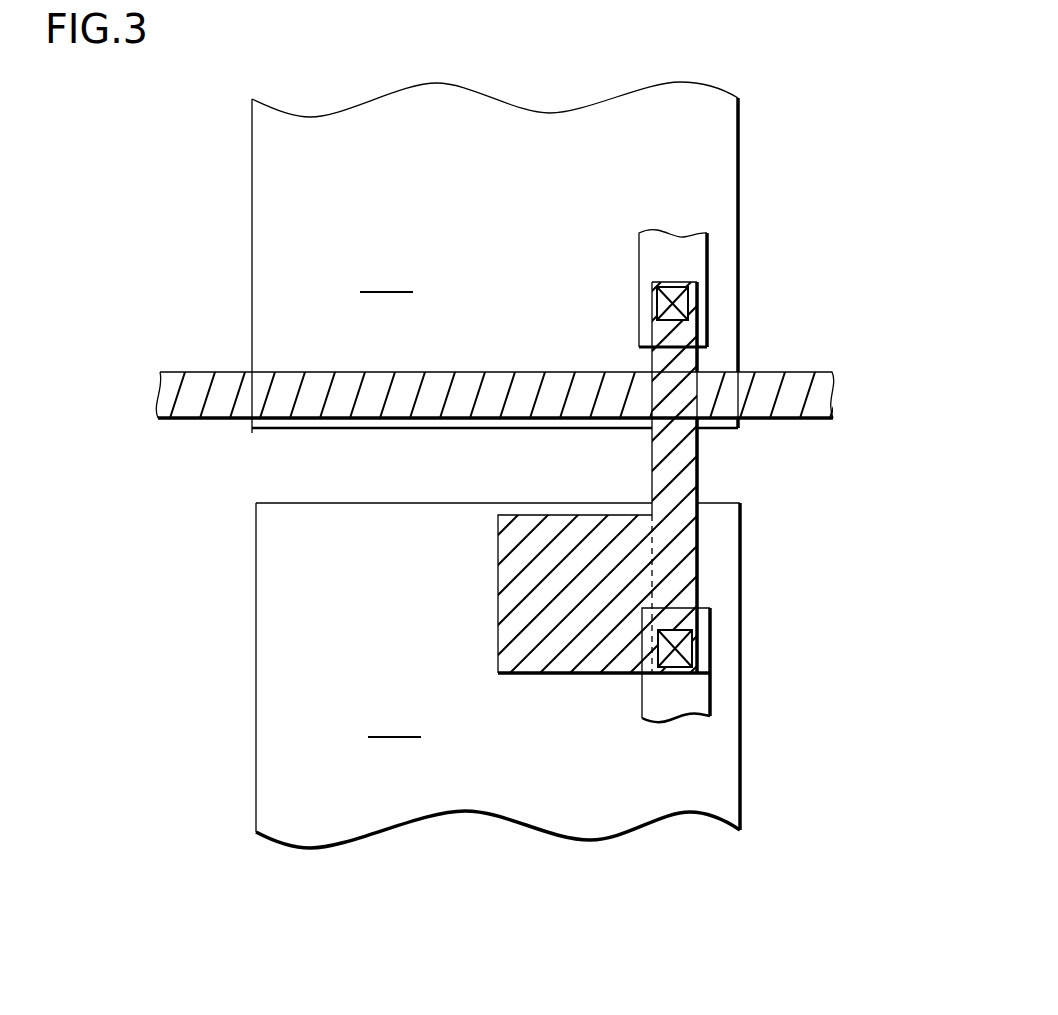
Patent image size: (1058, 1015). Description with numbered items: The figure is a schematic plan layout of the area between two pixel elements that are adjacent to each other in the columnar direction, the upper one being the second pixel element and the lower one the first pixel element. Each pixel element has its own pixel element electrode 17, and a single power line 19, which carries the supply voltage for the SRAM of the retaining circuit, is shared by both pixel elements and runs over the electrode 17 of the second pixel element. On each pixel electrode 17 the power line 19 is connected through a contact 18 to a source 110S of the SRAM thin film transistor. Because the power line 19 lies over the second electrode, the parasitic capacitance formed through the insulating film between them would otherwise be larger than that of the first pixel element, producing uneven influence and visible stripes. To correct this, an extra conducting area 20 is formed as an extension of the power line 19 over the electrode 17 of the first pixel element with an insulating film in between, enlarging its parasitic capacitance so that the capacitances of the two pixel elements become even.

The pixel element electrode 17 is at (275, 237).
The contact 18 is at (688, 302).
The power line 19 is at (165, 390).
The conducting area 20 is at (523, 577).
The source 110S is at (698, 265).